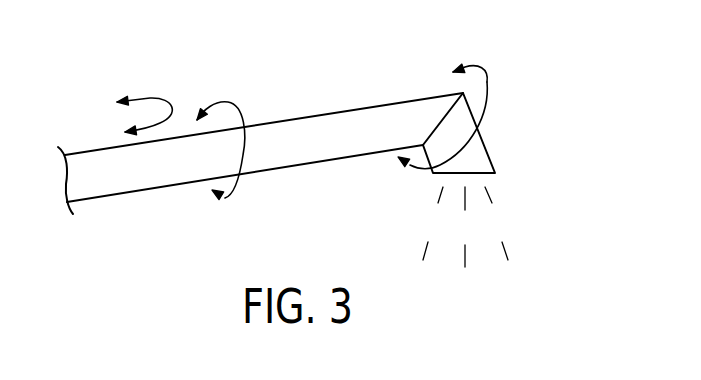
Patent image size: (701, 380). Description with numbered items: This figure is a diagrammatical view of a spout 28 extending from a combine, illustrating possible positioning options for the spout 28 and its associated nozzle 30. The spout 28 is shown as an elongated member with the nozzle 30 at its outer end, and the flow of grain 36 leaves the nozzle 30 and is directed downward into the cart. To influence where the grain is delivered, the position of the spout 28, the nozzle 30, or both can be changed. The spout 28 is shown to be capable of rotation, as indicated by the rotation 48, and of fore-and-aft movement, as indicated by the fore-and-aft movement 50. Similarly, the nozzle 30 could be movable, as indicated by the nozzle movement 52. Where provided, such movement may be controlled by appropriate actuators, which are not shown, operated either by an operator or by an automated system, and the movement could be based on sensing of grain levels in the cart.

The spout 28 is at (310, 143).
The nozzle 30 is at (486, 150).
The flow of grain 36 is at (505, 246).
The rotation 48 is at (239, 104).
The fore-and-aft movement 50 is at (158, 97).
The nozzle movement 52 is at (487, 82).